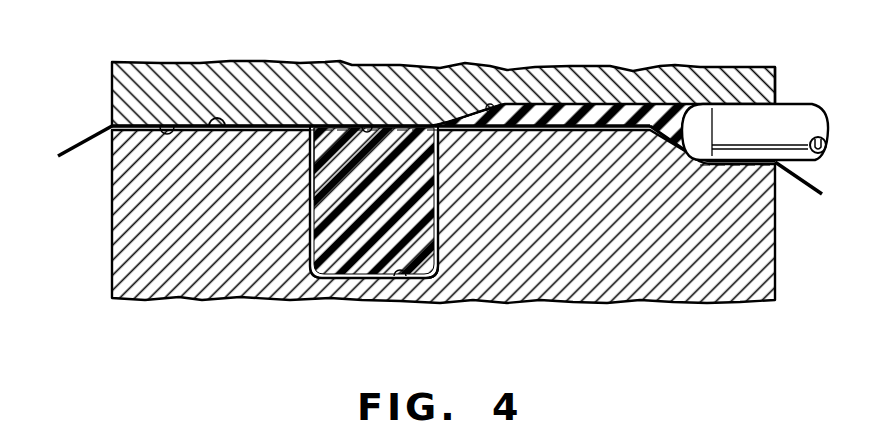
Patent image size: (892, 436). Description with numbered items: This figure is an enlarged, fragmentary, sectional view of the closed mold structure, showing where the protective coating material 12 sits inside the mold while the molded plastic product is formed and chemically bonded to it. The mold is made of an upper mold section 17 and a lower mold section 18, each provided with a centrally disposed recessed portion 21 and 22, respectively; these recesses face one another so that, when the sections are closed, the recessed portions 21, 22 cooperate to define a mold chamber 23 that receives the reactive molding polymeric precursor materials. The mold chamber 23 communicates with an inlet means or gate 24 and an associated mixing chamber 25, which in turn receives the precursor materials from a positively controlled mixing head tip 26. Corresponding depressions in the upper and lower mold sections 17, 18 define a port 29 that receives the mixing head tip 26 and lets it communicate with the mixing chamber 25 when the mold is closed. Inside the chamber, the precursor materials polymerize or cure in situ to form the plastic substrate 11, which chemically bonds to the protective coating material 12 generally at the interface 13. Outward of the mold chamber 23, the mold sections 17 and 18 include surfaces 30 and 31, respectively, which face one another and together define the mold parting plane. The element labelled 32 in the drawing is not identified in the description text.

The plastic substrate 11 is at (333, 263).
The protective coating material 12 is at (445, 255).
The interface 13 is at (440, 190).
The upper mold section 17 is at (140, 68).
The lower mold section 18 is at (165, 291).
The recessed portion 21 is at (370, 127).
The recessed portion 22 is at (400, 277).
The mold chamber 23 is at (328, 142).
The gate 24 is at (492, 107).
The mixing chamber 25 is at (630, 108).
The mixing head tip 26 is at (808, 117).
The port 29 is at (782, 100).
The surface 30 is at (173, 126).
The surface 31 is at (226, 129).
The conductor wires 32 is at (75, 147).